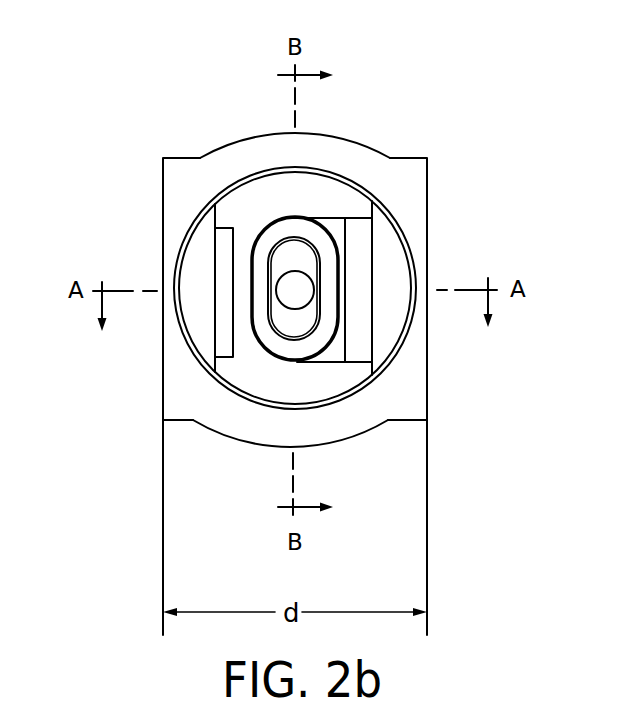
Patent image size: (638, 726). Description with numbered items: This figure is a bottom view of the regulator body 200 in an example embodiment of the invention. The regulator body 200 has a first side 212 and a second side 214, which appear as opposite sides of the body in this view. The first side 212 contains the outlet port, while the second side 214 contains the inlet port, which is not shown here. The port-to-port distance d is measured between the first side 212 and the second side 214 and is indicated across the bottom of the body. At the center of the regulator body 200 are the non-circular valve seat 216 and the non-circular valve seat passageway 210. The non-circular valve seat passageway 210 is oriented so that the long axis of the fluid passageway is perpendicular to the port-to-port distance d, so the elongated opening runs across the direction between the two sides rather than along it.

The regulator body 200 is at (150, 88).
The non-circular valve seat passageway 210 is at (275, 335).
The first side 212 is at (427, 212).
The second side 214 is at (163, 200).
The non-circular valve seat 216 is at (326, 319).